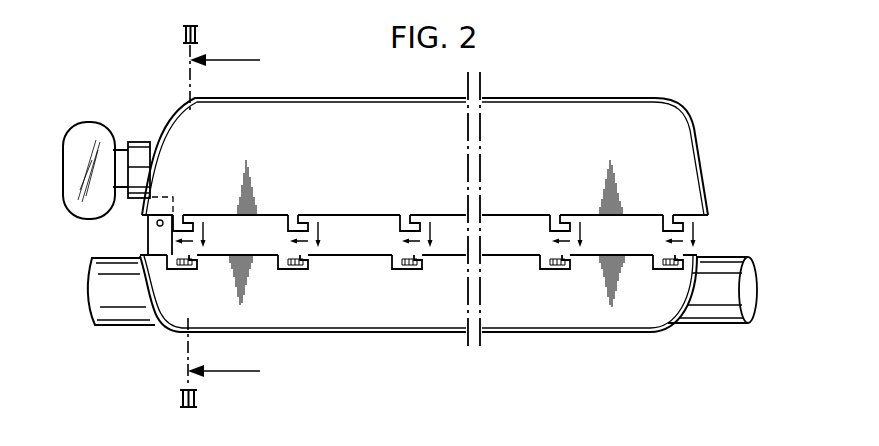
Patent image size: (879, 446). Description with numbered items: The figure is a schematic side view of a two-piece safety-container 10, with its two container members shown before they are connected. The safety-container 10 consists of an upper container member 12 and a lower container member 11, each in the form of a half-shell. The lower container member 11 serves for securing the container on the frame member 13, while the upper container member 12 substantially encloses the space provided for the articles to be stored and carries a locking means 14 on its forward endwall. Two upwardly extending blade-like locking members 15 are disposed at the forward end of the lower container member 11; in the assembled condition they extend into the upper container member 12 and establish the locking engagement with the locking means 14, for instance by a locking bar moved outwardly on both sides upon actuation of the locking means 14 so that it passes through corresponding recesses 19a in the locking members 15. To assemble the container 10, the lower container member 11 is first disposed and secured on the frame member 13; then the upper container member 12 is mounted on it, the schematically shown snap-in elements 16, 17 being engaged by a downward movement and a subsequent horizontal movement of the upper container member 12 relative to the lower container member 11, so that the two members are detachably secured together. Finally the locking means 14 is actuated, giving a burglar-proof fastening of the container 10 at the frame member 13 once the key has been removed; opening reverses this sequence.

The safety-container 10 is at (626, 92).
The lower container member 11 is at (351, 318).
The upper container member 12 is at (689, 172).
The frame member 13 is at (130, 312).
The locking means 14 is at (140, 152).
The locking members 15 is at (157, 226).
The snap-in elements 16 is at (303, 222).
The snap-in elements 17 is at (307, 263).
The recesses 19a is at (156, 226).